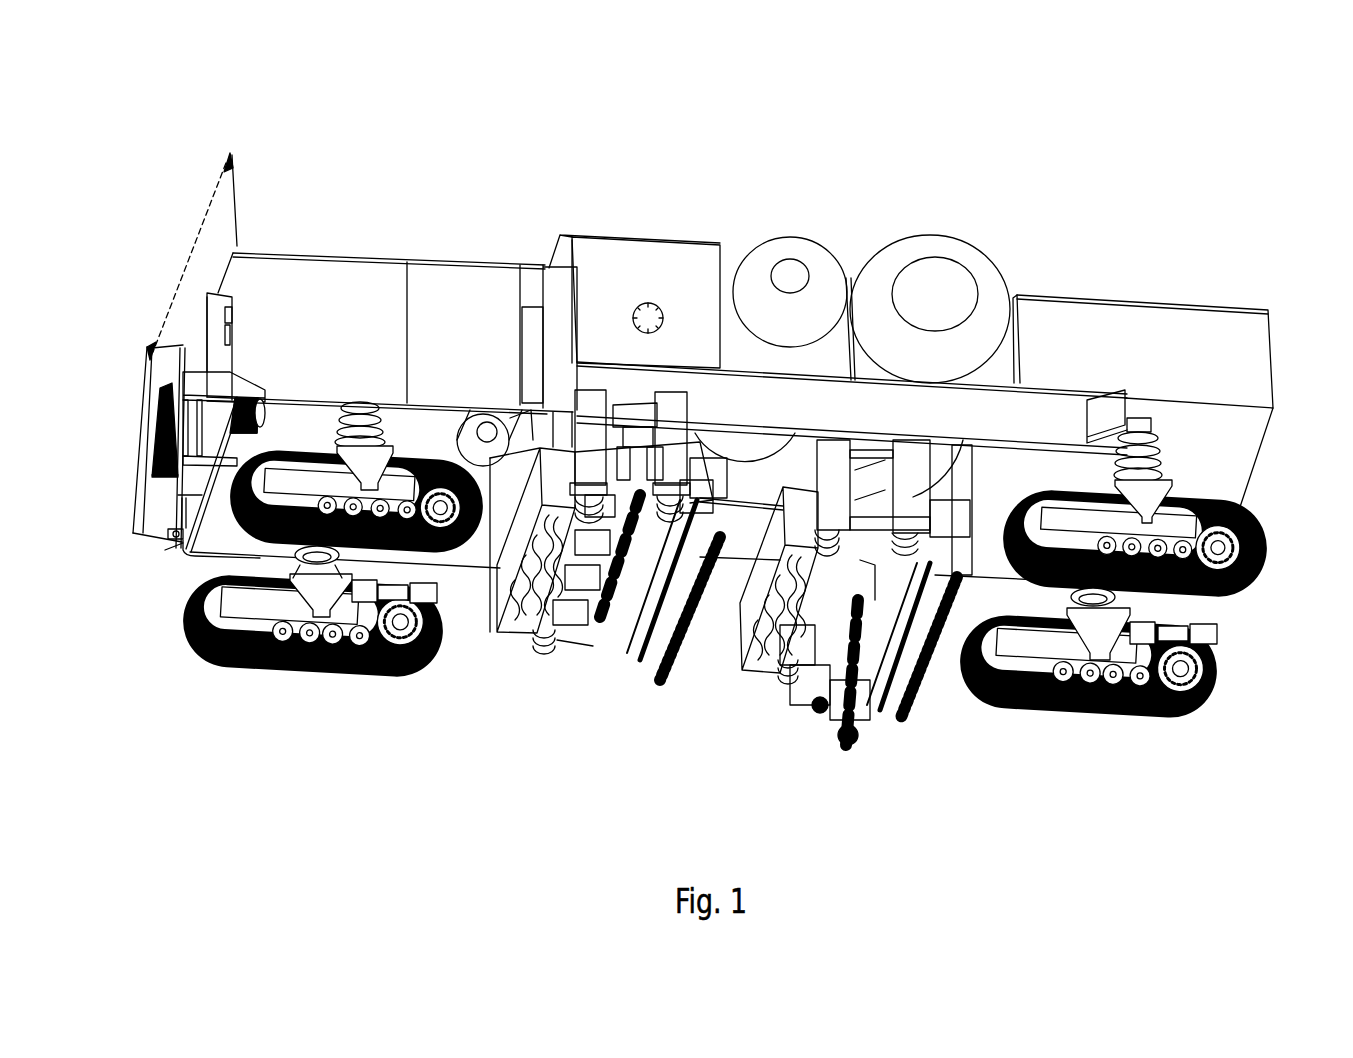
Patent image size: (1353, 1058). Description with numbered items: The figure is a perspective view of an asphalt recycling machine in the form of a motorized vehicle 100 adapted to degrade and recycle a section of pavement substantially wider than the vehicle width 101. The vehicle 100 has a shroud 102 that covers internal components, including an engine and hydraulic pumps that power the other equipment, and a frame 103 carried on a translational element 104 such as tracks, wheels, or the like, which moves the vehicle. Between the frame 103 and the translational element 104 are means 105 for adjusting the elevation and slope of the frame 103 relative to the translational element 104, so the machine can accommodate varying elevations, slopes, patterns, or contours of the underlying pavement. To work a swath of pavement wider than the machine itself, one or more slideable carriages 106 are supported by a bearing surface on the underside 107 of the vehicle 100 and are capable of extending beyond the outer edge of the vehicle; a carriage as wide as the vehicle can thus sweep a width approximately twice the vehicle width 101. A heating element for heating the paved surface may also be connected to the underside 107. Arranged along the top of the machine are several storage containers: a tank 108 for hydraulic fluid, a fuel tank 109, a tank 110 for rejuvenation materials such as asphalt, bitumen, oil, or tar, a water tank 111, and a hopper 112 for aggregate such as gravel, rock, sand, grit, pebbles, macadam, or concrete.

The motorized vehicle 100 is at (326, 82).
The vehicle width 101 is at (192, 256).
The shroud 102 is at (330, 298).
The frame 103 is at (895, 415).
The translational element 104 is at (1198, 712).
The means for adjusting elevation and slope 105 is at (362, 413).
The slideable carriage 106 is at (541, 688).
The underside 107 is at (737, 540).
The tank for storing hydraulic fluid 108 is at (650, 265).
The fuel tank 109 is at (792, 277).
The tank for storing rejuvenation materials 110 is at (925, 247).
The water tank 111 is at (487, 432).
The hopper 112 is at (1142, 338).